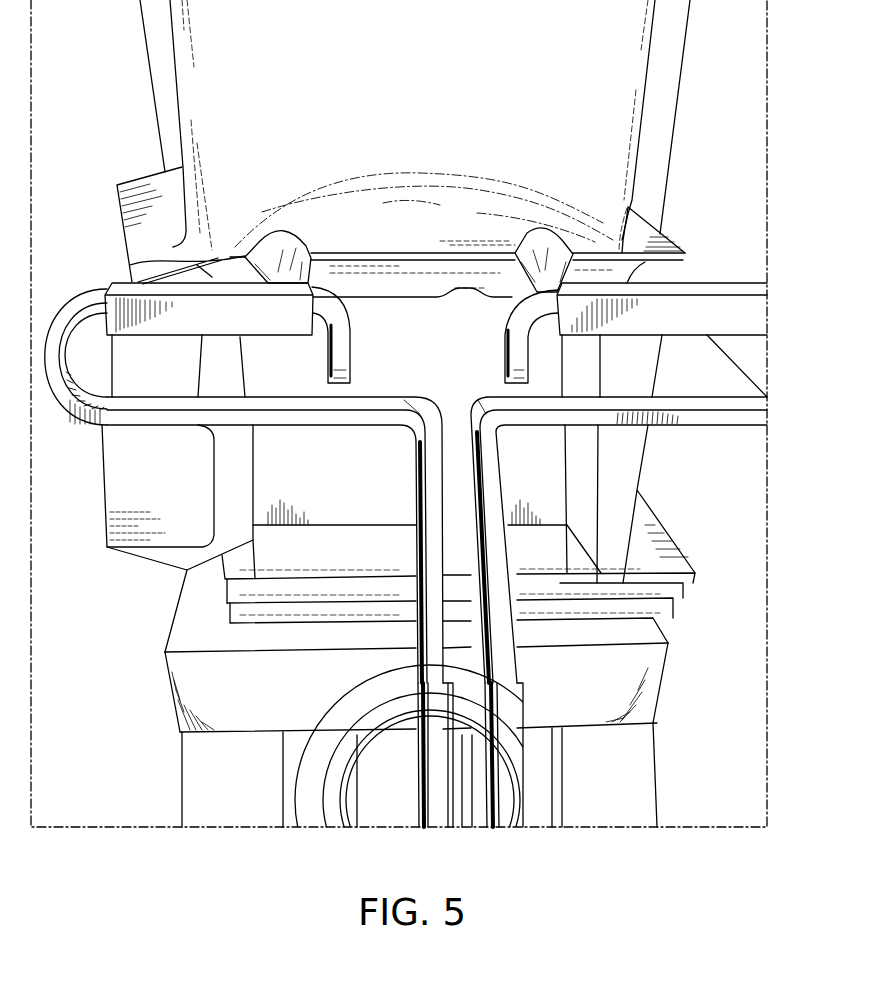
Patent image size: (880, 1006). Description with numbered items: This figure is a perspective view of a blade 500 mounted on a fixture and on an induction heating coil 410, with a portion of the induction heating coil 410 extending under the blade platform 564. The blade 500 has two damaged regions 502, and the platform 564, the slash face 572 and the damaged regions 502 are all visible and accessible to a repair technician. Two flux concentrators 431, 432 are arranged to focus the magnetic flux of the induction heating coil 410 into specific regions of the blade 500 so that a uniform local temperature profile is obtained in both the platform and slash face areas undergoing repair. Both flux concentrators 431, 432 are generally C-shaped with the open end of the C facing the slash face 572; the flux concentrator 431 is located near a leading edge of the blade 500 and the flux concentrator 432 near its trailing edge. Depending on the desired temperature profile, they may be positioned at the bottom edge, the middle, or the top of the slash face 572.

The blade 500 is at (433, 53).
The damaged regions 502 is at (277, 248).
The blade platform 564 is at (424, 240).
The slash face 572 is at (130, 265).
The flux concentrator 431 is at (231, 330).
The flux concentrator 432 is at (698, 320).
The induction heating coil 410 is at (76, 405).